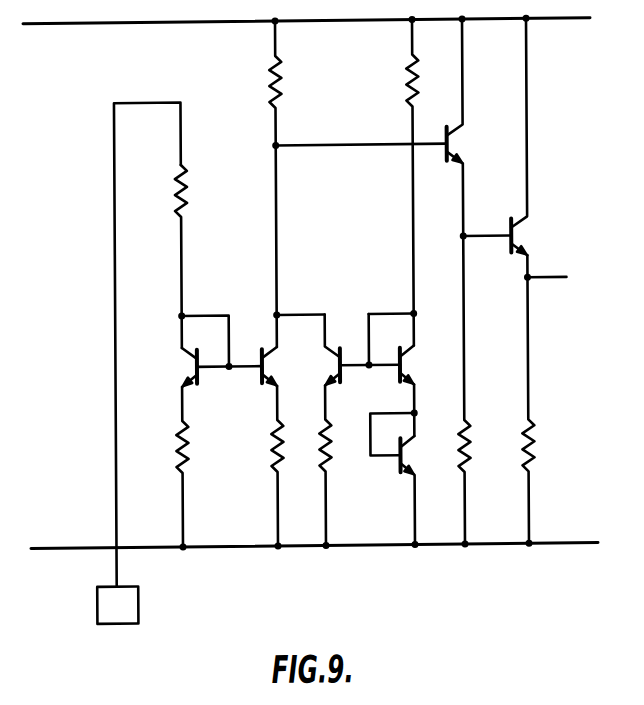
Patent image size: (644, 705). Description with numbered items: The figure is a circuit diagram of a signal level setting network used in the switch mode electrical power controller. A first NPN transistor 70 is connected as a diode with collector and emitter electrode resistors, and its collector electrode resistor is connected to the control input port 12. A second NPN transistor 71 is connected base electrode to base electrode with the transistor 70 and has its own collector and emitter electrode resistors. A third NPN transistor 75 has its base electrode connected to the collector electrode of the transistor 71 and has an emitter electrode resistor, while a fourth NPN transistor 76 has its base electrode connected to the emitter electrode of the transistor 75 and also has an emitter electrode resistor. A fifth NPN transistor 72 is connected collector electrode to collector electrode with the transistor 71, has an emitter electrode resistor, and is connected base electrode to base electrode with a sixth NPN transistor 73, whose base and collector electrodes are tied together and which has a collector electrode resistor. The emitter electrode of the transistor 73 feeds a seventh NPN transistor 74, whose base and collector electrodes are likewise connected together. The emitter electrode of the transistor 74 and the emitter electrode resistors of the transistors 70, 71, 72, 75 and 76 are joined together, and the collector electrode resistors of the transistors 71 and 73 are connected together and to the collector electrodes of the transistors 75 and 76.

The control input port 12 is at (140, 599).
The first NPN transistor 70 is at (191, 366).
The second NPN transistor 71 is at (268, 385).
The fifth NPN transistor 72 is at (333, 381).
The sixth NPN transistor 73 is at (409, 353).
The seventh NPN transistor 74 is at (407, 451).
The third NPN transistor 75 is at (452, 143).
The fourth NPN transistor 76 is at (518, 238).